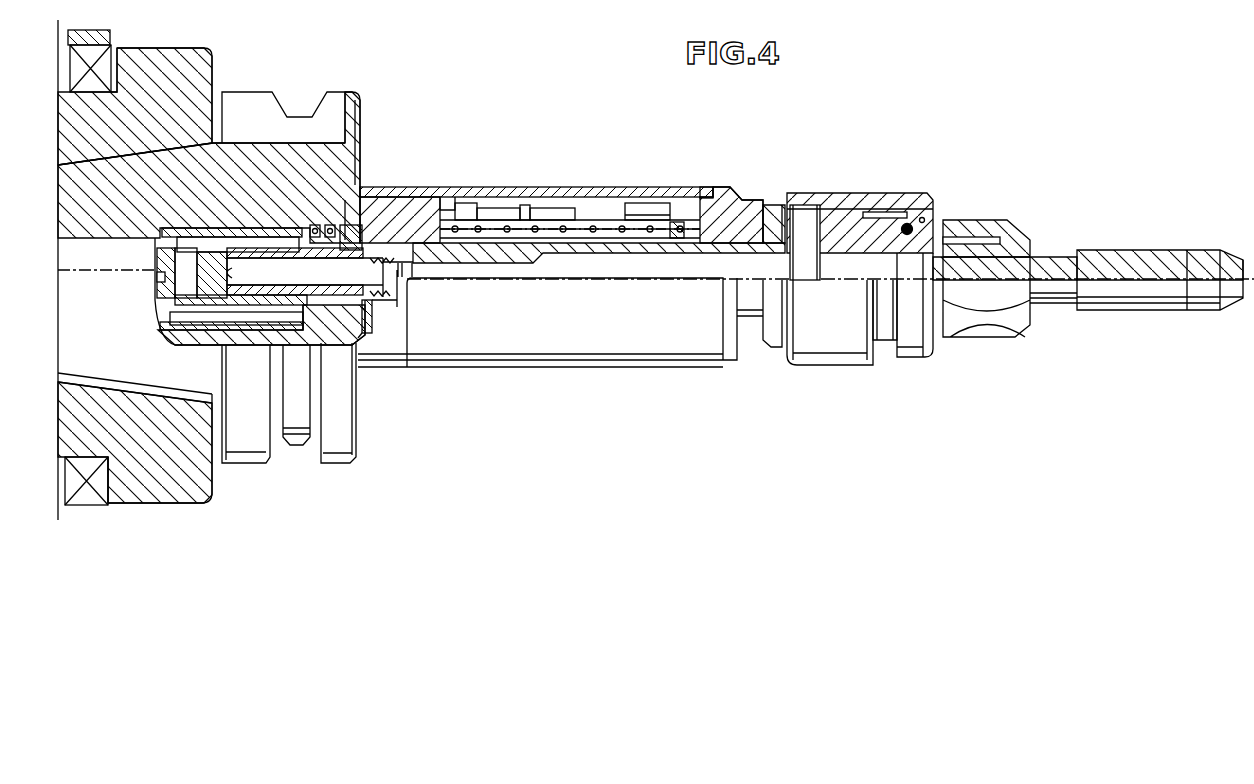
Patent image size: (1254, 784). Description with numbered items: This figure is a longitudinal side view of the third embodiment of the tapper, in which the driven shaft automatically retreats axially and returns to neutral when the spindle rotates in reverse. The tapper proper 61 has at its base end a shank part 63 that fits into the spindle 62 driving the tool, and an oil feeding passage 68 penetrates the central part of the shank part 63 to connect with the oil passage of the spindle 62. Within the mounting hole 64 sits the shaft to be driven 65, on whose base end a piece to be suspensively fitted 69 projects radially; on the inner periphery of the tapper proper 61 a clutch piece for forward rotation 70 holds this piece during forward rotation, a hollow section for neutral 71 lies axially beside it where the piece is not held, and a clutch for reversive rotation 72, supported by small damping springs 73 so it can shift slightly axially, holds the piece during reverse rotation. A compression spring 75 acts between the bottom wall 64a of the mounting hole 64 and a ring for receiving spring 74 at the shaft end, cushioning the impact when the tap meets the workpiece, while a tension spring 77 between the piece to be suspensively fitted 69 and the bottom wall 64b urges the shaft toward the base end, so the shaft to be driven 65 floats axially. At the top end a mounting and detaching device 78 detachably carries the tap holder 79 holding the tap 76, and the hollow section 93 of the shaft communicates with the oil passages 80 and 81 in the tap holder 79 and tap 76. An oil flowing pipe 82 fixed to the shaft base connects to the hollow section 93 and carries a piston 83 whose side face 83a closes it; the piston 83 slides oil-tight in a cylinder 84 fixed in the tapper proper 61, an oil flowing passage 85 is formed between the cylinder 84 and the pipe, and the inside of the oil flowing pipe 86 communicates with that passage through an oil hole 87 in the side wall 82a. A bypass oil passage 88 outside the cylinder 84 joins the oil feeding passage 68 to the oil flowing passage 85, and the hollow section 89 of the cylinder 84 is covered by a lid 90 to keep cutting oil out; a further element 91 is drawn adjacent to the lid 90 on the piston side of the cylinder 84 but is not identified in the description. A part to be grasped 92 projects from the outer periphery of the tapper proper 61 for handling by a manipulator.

The tapper proper 61 is at (420, 213).
The spindle 62 is at (197, 72).
The shank part 63 is at (173, 163).
The mounting hole 64 is at (393, 226).
The bottom wall 64a is at (326, 232).
The bottom wall 64b is at (712, 210).
The shaft to be driven 65 is at (600, 258).
The oil feeding passage 68 is at (100, 272).
The piece to be suspensively fitted 69 is at (470, 218).
The clutch piece for forward rotation 70 is at (500, 215).
The hollow section for neutral 71 is at (530, 215).
The clutch for reversive rotation 72 is at (560, 218).
The small damping springs 73 is at (636, 216).
The ring for receiving spring 74 is at (350, 228).
The compression spring 75 is at (356, 175).
The tap 76 is at (1107, 265).
The tension spring 77 is at (663, 223).
The mounting and detaching device 78 is at (862, 212).
The tap holder 79 is at (980, 227).
The oil passage 80 is at (930, 240).
The oil passage 81 is at (1063, 275).
The oil flowing pipe 82 is at (372, 305).
The side wall 82a is at (270, 352).
The piston 83 is at (207, 327).
The side face 83a is at (237, 253).
The cylinder 84 is at (290, 330).
The oil flowing passage 85 is at (300, 338).
The oil flowing pipe 86 is at (392, 278).
The oil hole 87 is at (236, 300).
The bypass oil passage 88 is at (277, 243).
The hollow section 89 is at (190, 253).
The lid 90 is at (158, 267).
The plunger 91 is at (172, 316).
The part to be grasped 92 is at (317, 465).
The hollow section 93 is at (733, 265).